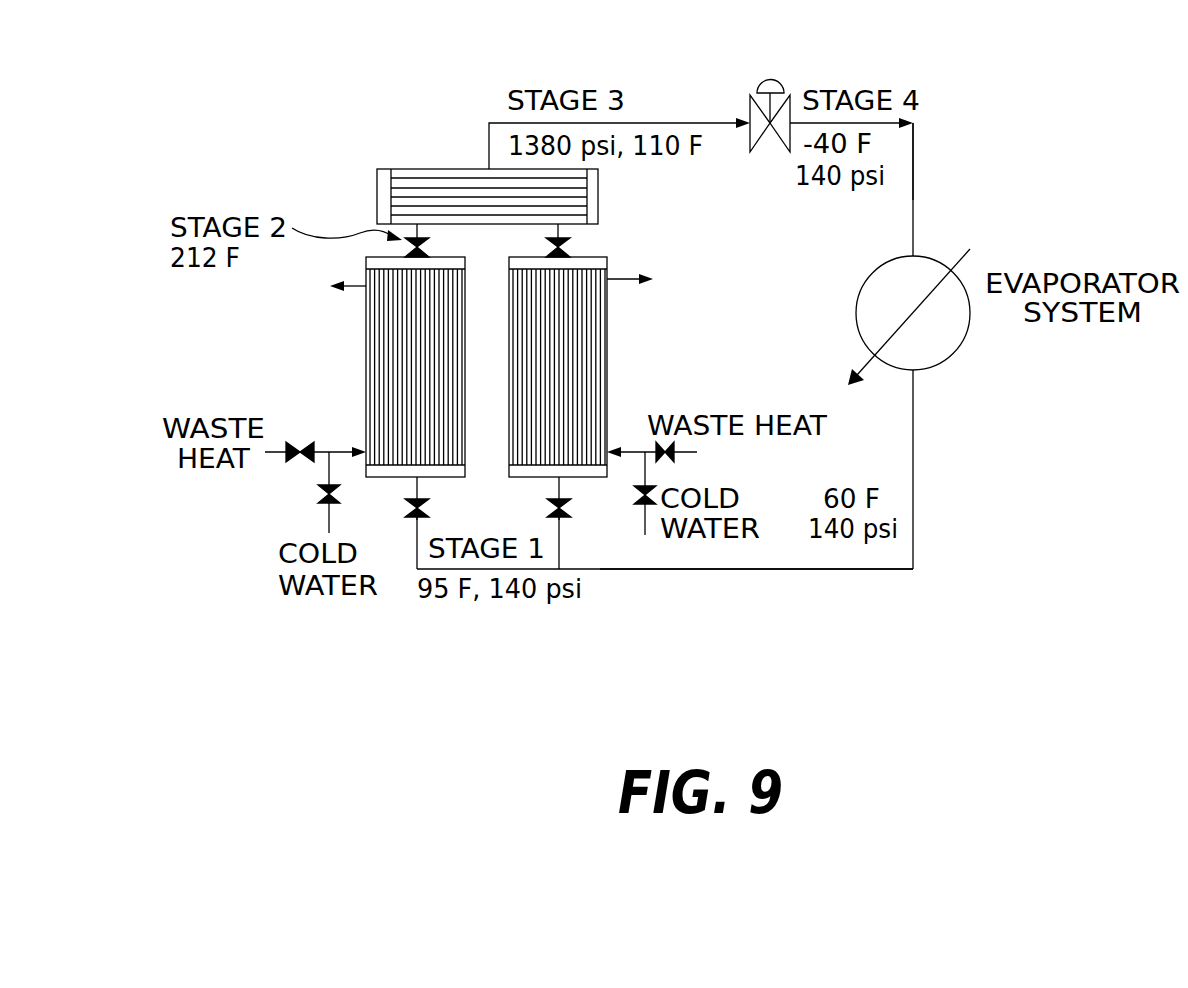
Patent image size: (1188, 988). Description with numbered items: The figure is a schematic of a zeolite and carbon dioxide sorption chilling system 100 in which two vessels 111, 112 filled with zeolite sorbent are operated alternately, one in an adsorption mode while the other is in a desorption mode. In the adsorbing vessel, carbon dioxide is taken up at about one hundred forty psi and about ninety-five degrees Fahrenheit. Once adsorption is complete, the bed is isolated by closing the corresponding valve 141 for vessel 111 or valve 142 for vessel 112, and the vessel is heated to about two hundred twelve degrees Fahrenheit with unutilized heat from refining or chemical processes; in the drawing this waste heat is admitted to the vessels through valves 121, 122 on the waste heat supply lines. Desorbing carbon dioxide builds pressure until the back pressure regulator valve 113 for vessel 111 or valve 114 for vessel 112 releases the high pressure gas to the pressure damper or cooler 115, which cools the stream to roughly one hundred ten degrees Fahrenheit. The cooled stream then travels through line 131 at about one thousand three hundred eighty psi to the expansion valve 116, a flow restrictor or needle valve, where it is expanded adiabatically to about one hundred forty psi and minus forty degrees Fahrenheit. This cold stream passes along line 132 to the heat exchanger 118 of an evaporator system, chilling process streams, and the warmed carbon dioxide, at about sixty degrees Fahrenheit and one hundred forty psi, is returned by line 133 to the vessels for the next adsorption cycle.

The sorption chilling system 100 is at (1080, 85).
The first vessel 111 is at (381, 368).
The second vessel 112 is at (592, 368).
The back pressure regulator valve 113 is at (404, 252).
The back pressure regulator valve 114 is at (568, 249).
The pressure damper or cooler 115 is at (425, 181).
The expansion valve 116 is at (790, 95).
The heat exchanger 118 is at (943, 338).
The first waste heat valve 121 is at (270, 452).
The second waste heat valve 122 is at (697, 452).
The line 131 is at (653, 123).
The stage 4 line 132 is at (913, 153).
The return line 133 is at (752, 569).
The valve 141 is at (412, 513).
The valve 142 is at (566, 517).